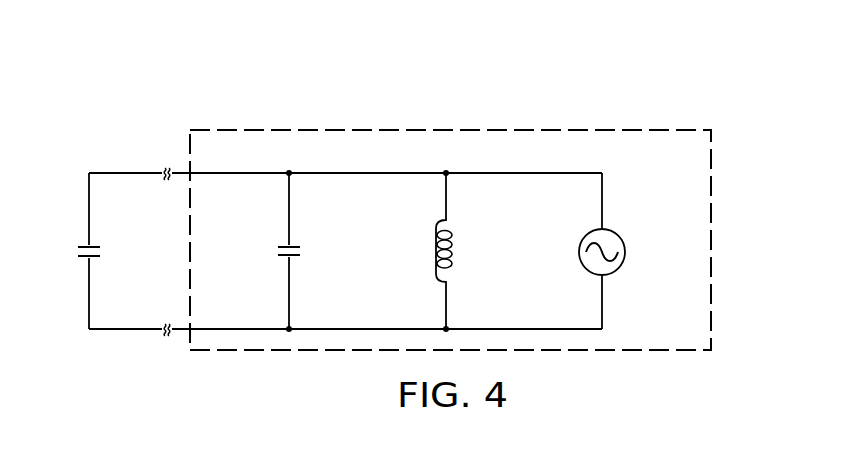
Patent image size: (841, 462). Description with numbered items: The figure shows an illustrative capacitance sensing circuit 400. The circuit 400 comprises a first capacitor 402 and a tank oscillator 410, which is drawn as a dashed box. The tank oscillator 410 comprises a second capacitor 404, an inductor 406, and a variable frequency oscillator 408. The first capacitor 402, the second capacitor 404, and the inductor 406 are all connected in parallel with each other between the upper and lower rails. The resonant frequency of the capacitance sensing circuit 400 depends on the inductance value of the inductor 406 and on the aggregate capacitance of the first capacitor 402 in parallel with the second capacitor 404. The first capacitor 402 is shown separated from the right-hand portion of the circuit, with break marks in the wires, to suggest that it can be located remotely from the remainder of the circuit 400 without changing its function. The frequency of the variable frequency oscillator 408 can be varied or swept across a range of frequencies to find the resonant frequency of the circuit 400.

The capacitance sensing circuit 400 is at (197, 86).
The first capacitor 402 is at (78, 250).
The second capacitor 404 is at (278, 250).
The inductor 406 is at (434, 253).
The variable frequency oscillator 408 is at (626, 250).
The tank oscillator 410 is at (517, 129).